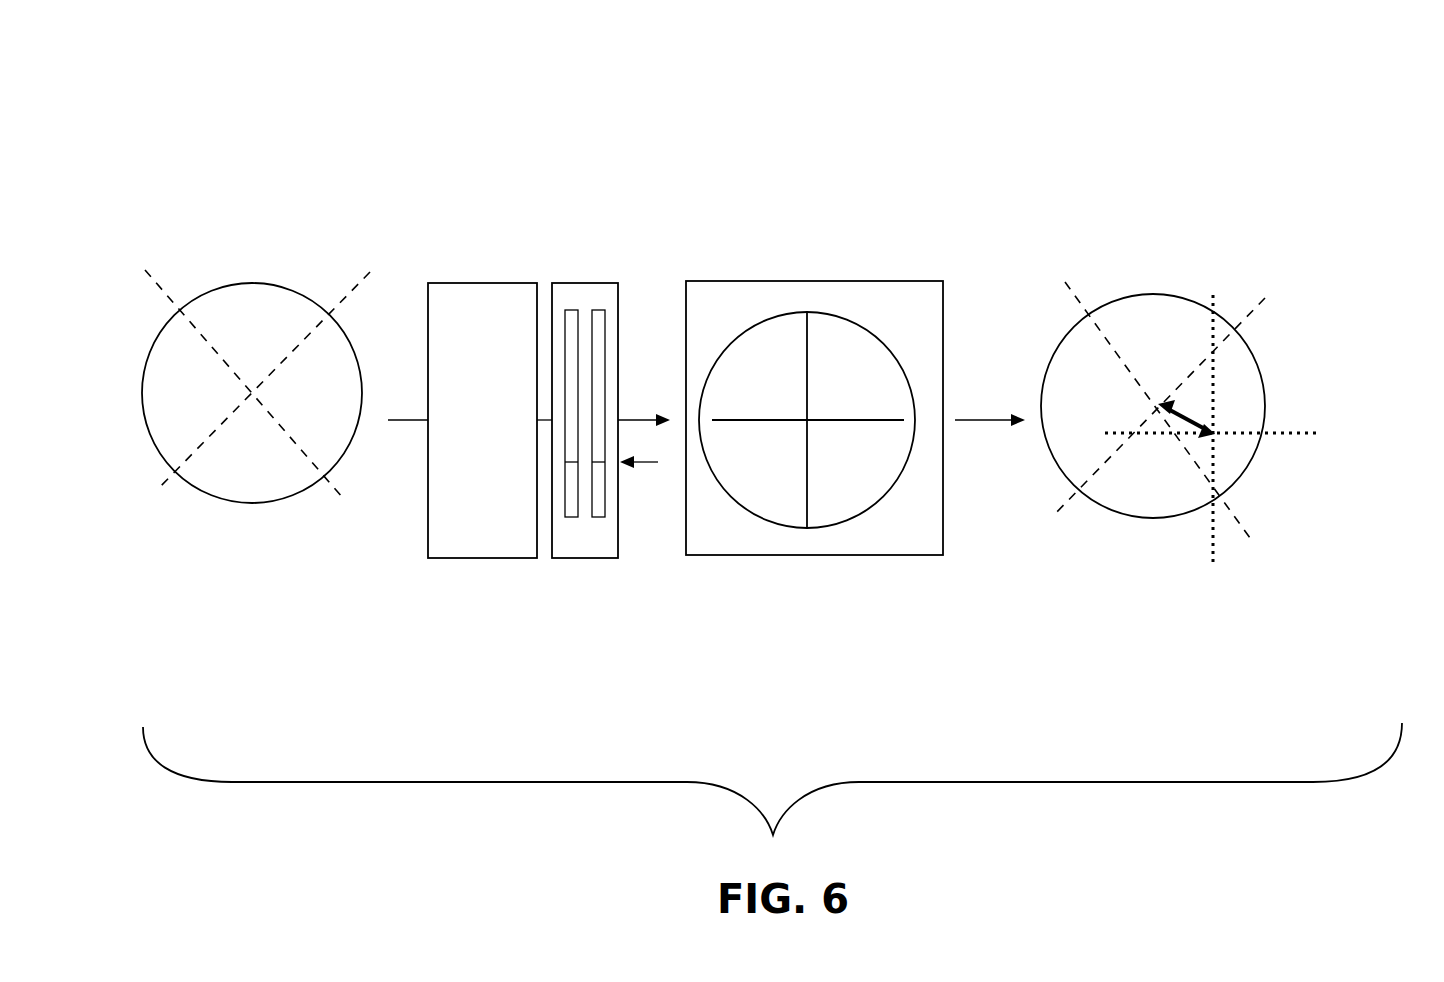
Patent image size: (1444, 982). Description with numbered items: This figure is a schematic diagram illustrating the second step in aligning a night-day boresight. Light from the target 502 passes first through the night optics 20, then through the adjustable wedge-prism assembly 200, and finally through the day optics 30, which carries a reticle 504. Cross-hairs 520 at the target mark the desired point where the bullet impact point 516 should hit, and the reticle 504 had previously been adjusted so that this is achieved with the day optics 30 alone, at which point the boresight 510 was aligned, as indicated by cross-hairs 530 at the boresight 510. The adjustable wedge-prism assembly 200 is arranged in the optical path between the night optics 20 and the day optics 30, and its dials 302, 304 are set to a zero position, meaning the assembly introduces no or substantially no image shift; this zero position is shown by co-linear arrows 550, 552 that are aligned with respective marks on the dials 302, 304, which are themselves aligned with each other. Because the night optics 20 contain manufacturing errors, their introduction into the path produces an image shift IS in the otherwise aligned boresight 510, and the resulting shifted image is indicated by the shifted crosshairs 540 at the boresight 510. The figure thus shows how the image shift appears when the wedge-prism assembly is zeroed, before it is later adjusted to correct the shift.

The target 502 is at (255, 333).
The cross-hairs 520 is at (170, 477).
The bullet impact point 516 is at (252, 416).
The night optics 20 is at (457, 283).
The adjustable wedge-prism assembly 200 is at (574, 424).
The dial 302 is at (563, 309).
The dial 304 is at (590, 308).
The control signal 550 is at (710, 552).
The co-linear arrow 552 is at (647, 462).
The day optics 30 is at (820, 402).
The reticle 504 is at (847, 325).
The boresight 510 is at (1226, 326).
The cross-hairs 530 is at (1065, 503).
The shifted crosshairs 540 is at (1268, 435).
The image shift IS is at (1202, 415).